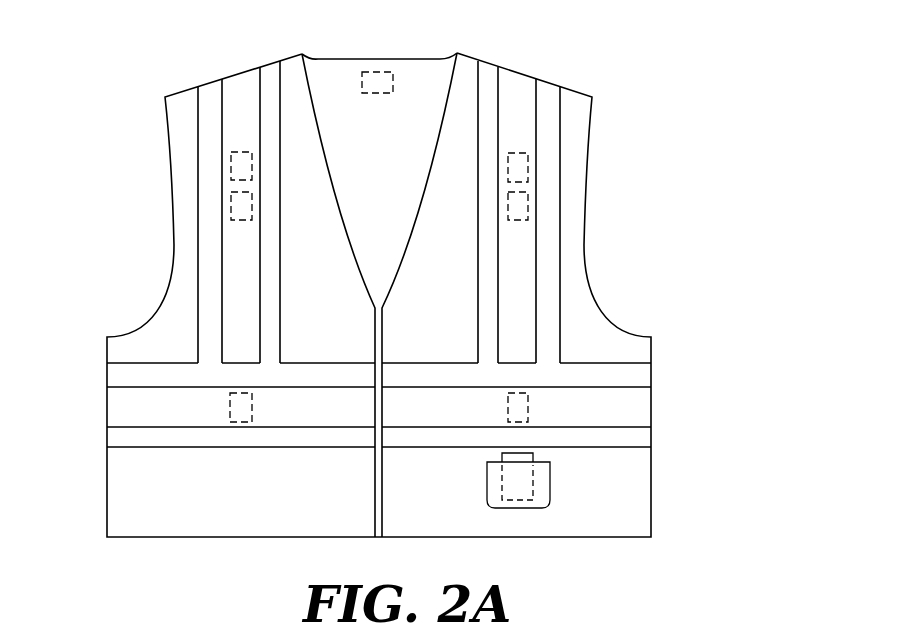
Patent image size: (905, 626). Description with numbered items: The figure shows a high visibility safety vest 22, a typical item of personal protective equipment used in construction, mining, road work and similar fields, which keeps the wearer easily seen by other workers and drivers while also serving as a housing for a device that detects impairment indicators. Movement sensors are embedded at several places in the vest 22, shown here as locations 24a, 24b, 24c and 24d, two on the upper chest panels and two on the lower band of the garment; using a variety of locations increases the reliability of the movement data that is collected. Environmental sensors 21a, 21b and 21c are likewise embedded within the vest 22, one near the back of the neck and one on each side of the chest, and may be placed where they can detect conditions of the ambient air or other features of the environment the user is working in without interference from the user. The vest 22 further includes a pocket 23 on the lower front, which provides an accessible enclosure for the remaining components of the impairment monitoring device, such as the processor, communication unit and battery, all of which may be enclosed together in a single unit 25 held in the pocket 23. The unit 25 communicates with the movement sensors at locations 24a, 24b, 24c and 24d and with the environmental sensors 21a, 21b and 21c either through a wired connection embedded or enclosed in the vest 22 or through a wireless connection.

The high visibility safety vest 22 is at (636, 244).
The environmental sensor 21a is at (528, 168).
The environmental sensor 21b is at (231, 168).
The environmental sensor 21c is at (380, 72).
The movement sensor location 24a is at (528, 206).
The movement sensor location 24b is at (231, 207).
The movement sensor location 24c is at (230, 412).
The movement sensor location 24d is at (528, 403).
The pocket 23 is at (532, 480).
The single unit 25 is at (527, 508).